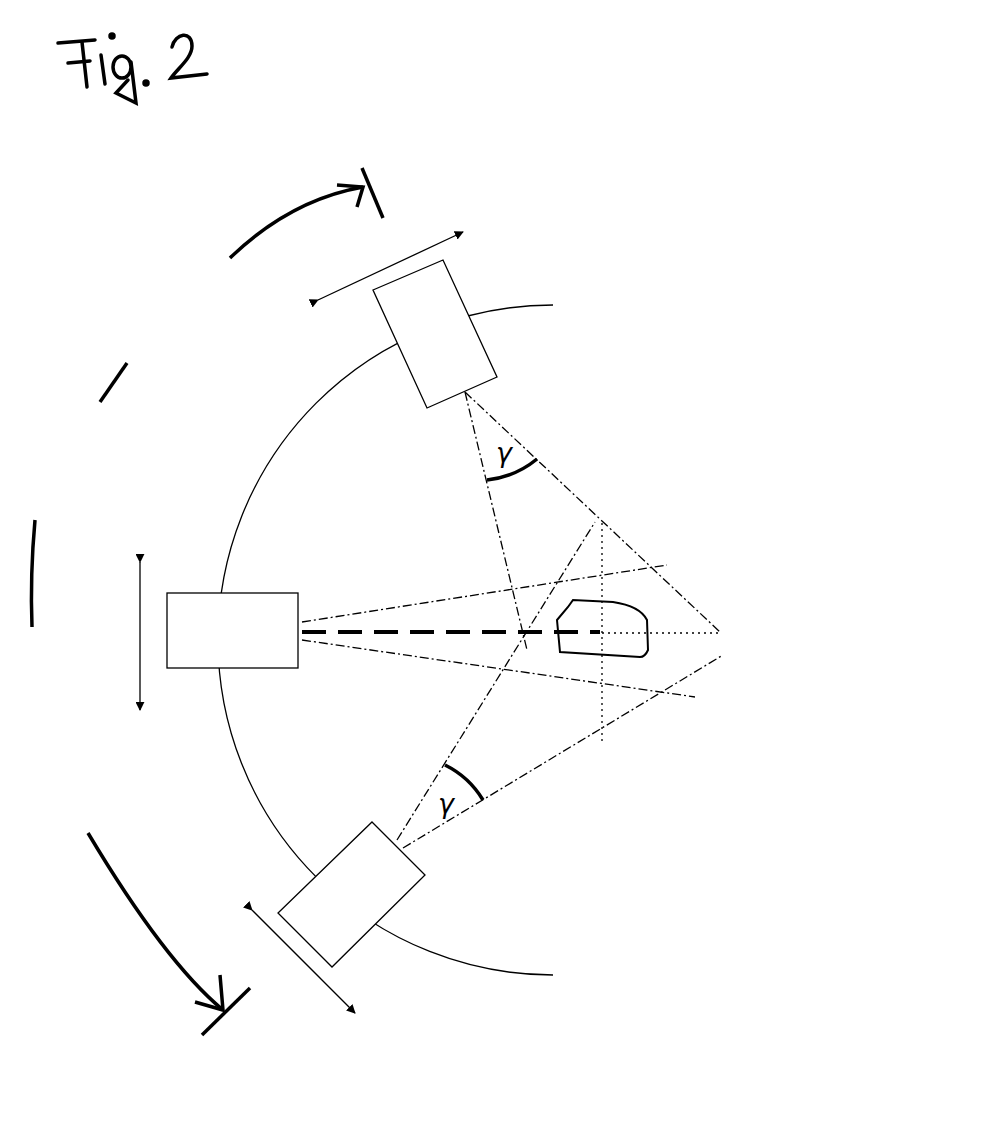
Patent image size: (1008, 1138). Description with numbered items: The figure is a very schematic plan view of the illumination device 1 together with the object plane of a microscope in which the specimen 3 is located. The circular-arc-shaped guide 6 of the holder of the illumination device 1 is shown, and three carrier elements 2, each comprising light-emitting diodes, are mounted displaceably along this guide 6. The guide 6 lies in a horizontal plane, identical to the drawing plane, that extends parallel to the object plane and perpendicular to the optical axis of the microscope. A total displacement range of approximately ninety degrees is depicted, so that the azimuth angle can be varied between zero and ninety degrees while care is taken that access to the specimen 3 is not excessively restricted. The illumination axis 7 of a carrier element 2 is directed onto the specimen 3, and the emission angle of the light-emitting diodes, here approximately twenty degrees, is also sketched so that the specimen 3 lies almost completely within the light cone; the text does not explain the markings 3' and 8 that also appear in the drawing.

The illumination device 1 is at (622, 262).
The carrier element 2 is at (443, 317).
The specimen 3 is at (659, 606).
The object position 3' is at (884, 374).
The guide 6 is at (297, 420).
The illumination axis 7 is at (468, 624).
The rotation direction 8 is at (53, 510).